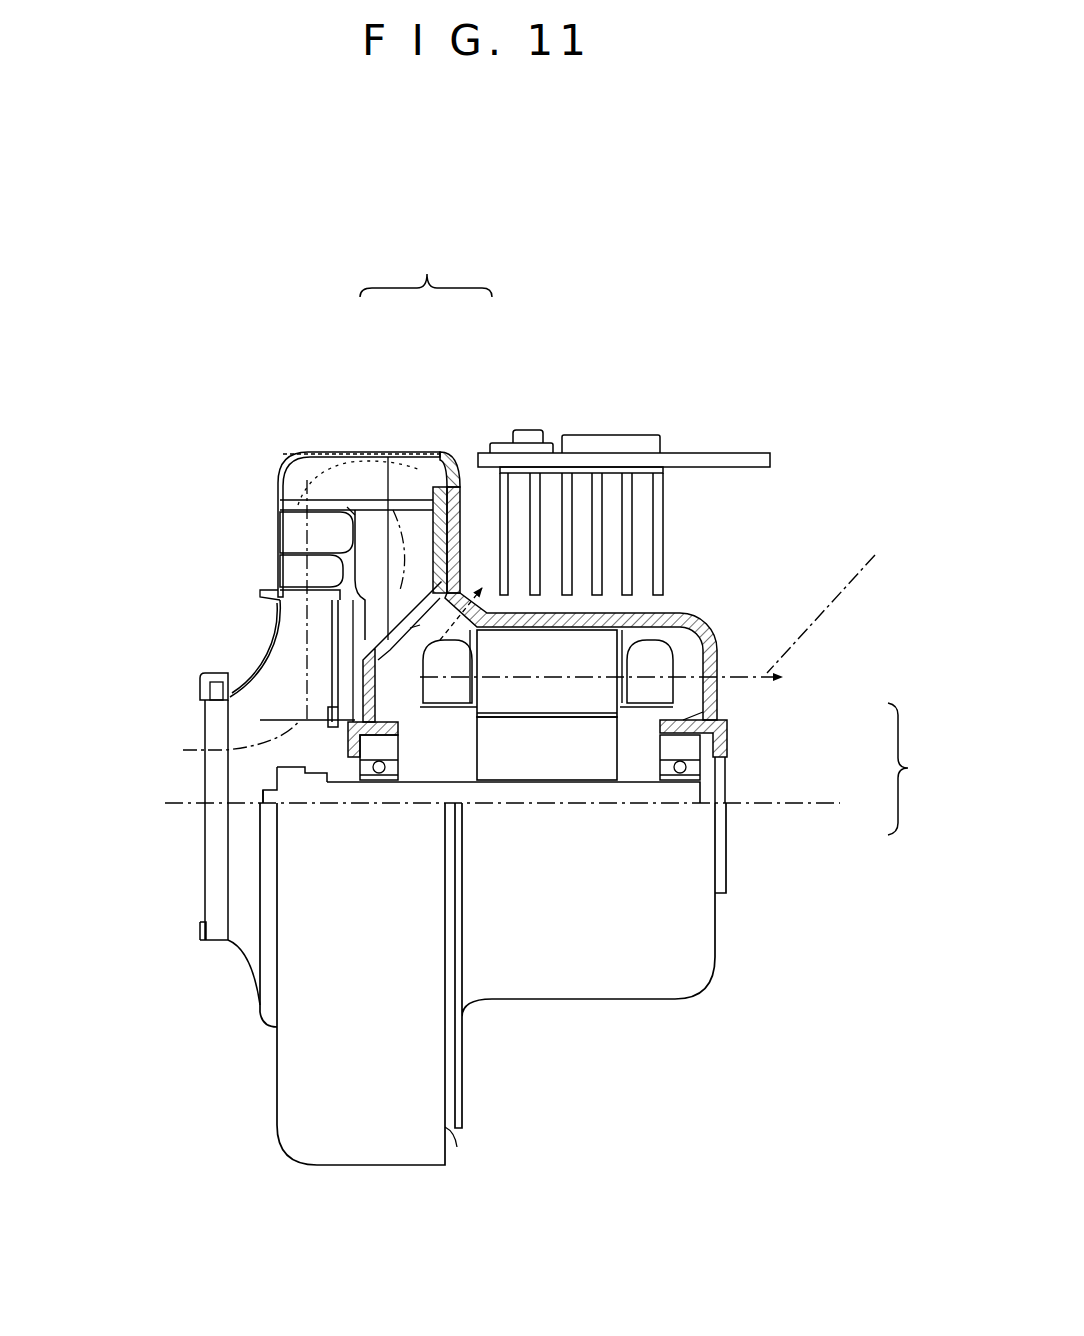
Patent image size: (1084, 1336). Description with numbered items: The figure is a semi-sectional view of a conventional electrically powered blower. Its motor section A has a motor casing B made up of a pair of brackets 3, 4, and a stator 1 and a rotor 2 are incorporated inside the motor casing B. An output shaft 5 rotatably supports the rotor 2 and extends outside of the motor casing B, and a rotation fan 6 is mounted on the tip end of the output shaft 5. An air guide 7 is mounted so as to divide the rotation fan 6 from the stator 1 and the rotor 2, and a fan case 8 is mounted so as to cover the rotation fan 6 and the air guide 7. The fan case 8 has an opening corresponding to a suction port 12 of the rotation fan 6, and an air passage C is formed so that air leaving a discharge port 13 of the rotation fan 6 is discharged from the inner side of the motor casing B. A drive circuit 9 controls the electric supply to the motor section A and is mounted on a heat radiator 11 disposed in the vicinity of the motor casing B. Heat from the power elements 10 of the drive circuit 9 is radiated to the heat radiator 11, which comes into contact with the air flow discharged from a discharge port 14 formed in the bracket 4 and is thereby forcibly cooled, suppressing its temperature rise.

The stator 1 is at (670, 702).
The rotor 2 is at (583, 748).
The bracket 3 is at (432, 455).
The bracket 4 is at (452, 485).
The output shaft 5 is at (562, 790).
The rotation fan 6 is at (273, 680).
The air guide 7 is at (347, 505).
The fan case 8 is at (350, 452).
The drive circuit 9 is at (707, 457).
The power elements 10 is at (596, 443).
The heat radiator 11 is at (570, 553).
The suction port 12 is at (240, 735).
The discharge port 13 is at (280, 590).
The discharge port 14 is at (462, 595).
The motor section A is at (908, 767).
The motor casing B is at (427, 273).
The air passage C is at (833, 600).